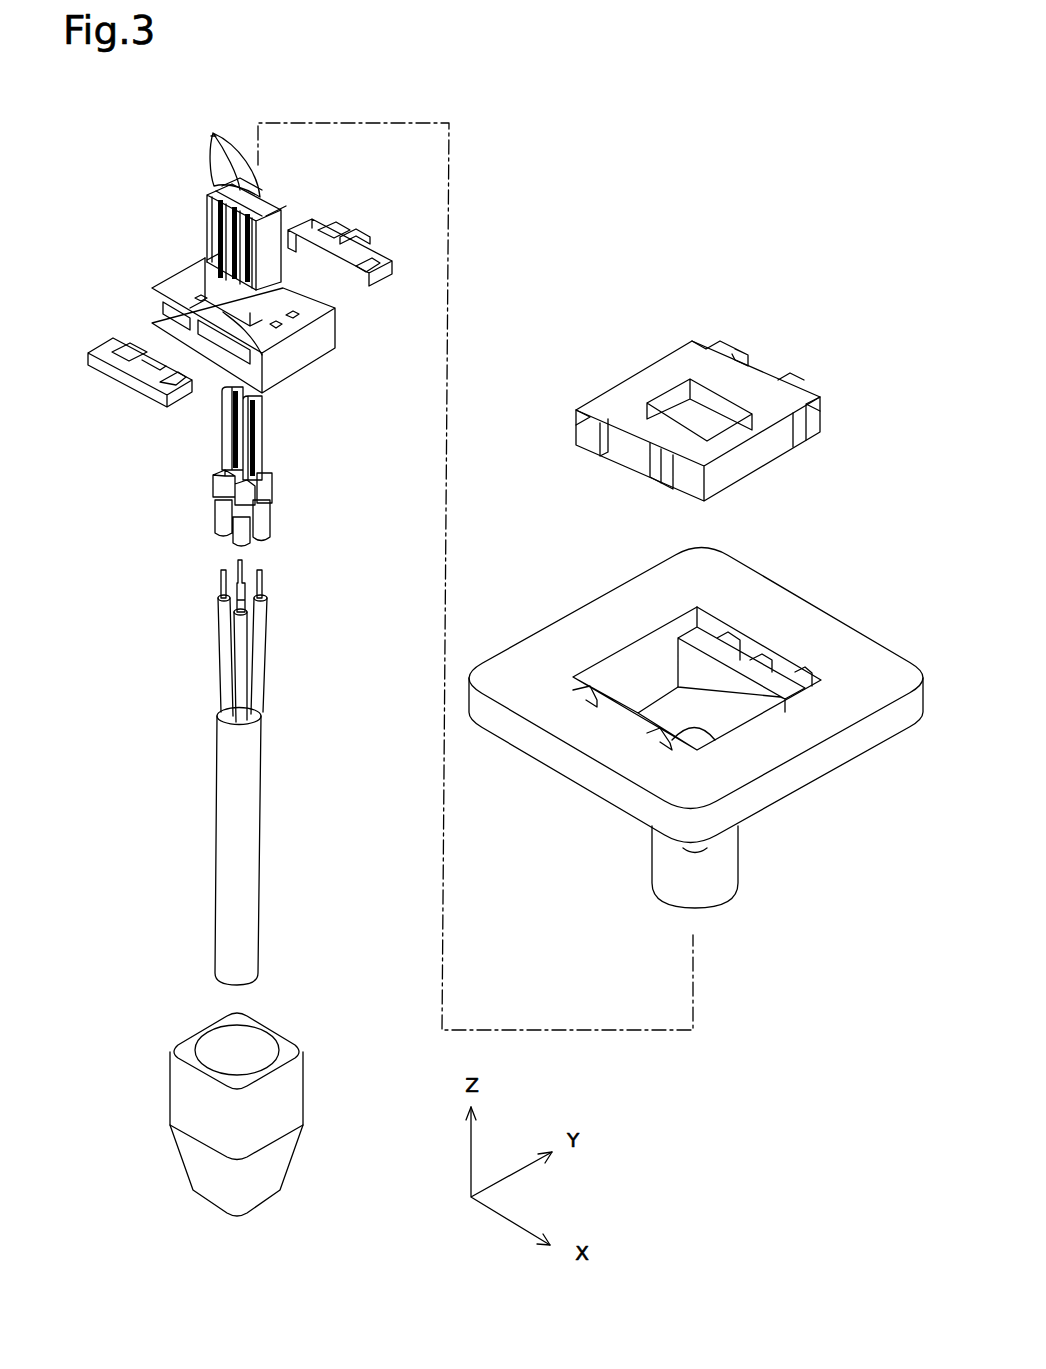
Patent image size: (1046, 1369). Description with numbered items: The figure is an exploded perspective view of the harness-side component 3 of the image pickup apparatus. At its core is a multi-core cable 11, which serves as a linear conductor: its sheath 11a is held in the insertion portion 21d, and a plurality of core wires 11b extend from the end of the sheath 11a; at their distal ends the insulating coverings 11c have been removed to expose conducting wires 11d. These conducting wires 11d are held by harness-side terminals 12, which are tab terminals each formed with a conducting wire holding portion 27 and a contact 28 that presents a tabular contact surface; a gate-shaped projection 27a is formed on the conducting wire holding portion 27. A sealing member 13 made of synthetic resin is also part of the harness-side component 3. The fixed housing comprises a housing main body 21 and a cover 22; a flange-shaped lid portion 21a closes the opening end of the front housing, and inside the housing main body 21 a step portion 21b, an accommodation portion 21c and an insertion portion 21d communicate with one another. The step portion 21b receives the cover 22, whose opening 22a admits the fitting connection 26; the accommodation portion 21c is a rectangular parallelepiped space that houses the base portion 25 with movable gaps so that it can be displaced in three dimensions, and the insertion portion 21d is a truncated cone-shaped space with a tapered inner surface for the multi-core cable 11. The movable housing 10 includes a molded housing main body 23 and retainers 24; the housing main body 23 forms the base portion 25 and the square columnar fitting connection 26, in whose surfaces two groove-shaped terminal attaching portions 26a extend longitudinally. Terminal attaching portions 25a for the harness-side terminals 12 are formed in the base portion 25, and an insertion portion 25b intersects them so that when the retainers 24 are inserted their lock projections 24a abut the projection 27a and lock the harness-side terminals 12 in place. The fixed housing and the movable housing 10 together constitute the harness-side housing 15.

The harness-side component 3 is at (578, 160).
The movable housing 10 is at (197, 258).
The harness-side housing 15 is at (461, 509).
The multi-core cable 11 is at (220, 772).
The sheath 11a is at (232, 790).
The core wires 11b is at (242, 658).
The insulating coverings 11c is at (250, 690).
The conducting wires 11d is at (260, 590).
The harness-side terminals 12 is at (216, 472).
The sealing member 13 is at (303, 1085).
The housing main body 21 is at (696, 695).
The lid portion 21a is at (622, 596).
The step portion 21b is at (751, 670).
The accommodation portion 21c is at (651, 679).
The insertion portion 21d is at (692, 740).
The cover 22 is at (698, 387).
The opening 22a is at (668, 402).
The housing main body 23 is at (210, 232).
The retainers 24 is at (197, 296).
The lock projections 24a is at (147, 363).
The base portion 25 is at (209, 303).
The terminal attaching portions 25a is at (225, 312).
The insertion portion 25b is at (163, 310).
The fitting connection 26 is at (187, 153).
The terminal attaching portions 26a is at (208, 125).
The conducting wire holding portion 27 is at (217, 520).
The projection 27a is at (217, 483).
The contact 28 is at (227, 423).